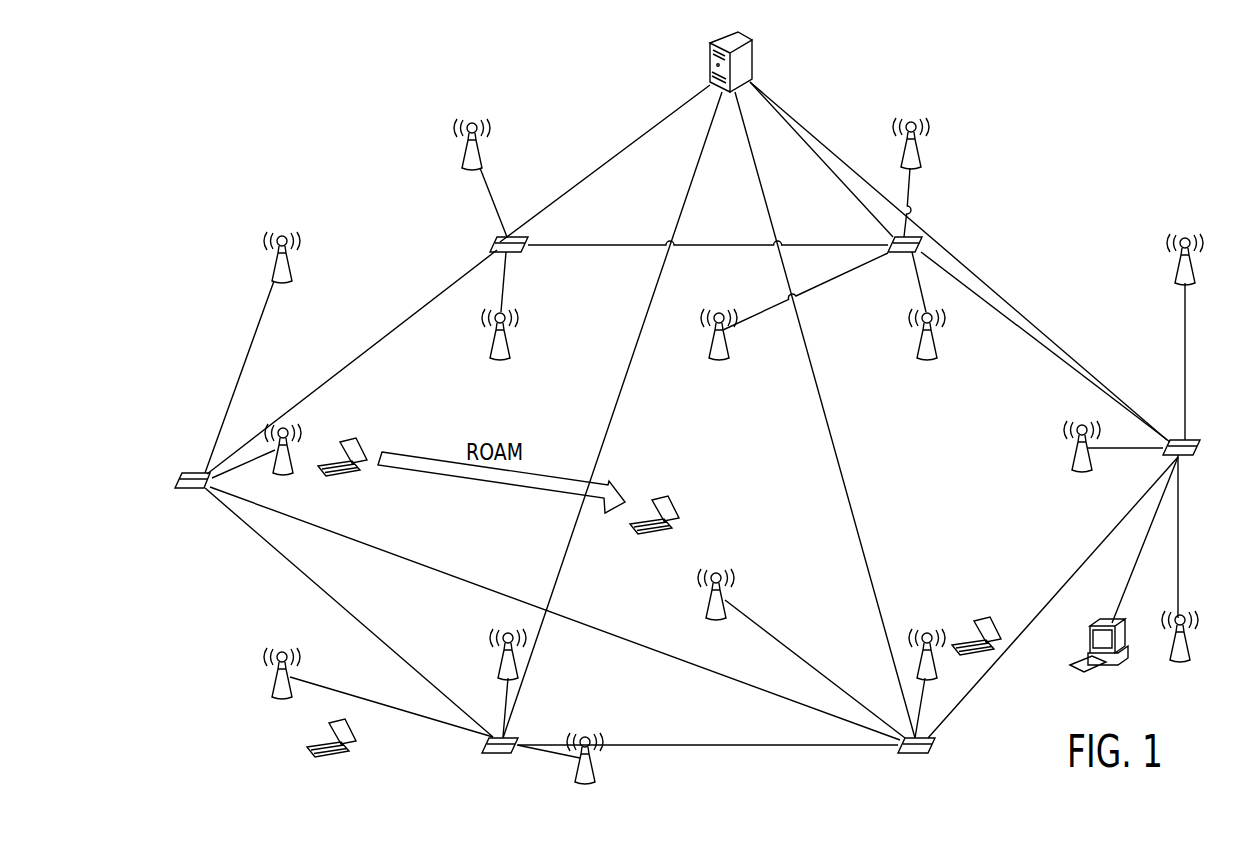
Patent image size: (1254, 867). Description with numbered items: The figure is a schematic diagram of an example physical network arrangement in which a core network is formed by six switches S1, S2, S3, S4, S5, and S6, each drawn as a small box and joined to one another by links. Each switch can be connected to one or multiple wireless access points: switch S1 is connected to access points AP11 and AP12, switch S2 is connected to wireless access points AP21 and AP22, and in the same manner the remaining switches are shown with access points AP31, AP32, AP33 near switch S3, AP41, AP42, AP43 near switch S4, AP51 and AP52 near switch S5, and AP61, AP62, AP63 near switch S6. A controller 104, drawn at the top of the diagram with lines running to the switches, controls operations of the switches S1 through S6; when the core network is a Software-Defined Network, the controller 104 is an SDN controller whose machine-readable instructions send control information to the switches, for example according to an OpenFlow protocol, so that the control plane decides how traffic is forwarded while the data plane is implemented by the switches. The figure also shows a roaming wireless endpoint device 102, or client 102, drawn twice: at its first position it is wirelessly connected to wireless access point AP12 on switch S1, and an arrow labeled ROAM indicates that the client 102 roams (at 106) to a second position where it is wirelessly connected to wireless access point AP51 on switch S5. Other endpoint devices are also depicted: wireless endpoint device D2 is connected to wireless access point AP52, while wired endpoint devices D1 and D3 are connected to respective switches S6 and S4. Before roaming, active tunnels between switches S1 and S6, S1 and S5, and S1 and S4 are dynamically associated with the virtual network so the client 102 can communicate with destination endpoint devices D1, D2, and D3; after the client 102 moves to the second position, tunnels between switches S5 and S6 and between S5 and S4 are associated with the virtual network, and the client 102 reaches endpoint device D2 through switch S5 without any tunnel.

The roaming wireless endpoint device 102 is at (355, 440).
The controller 104 is at (753, 60).
The roam 106 is at (489, 489).
The switch S1 is at (180, 483).
The switch S2 is at (495, 246).
The switch S3 is at (901, 257).
The switch S4 is at (500, 758).
The switch S5 is at (916, 758).
The switch S6 is at (1196, 449).
The wireless access point AP11 is at (304, 257).
The wireless access point AP12 is at (282, 462).
The wireless access point AP21 is at (494, 144).
The wireless access point AP22 is at (523, 334).
The wireless access point AP31 is at (933, 143).
The wireless access point AP32 is at (696, 334).
The wireless access point AP33 is at (949, 334).
The wireless access point AP41 is at (487, 654).
The wireless access point AP42 is at (261, 673).
The wireless access point AP43 is at (608, 758).
The wireless access point AP51 is at (694, 594).
The wireless access point AP52 is at (926, 641).
The wireless access point AP61 is at (1207, 259).
The wireless access point AP62 is at (1060, 446).
The wireless access point AP63 is at (1203, 637).
The wired endpoint device D1 is at (1092, 645).
The wireless endpoint device D2 is at (976, 623).
The wired endpoint device D3 is at (345, 738).